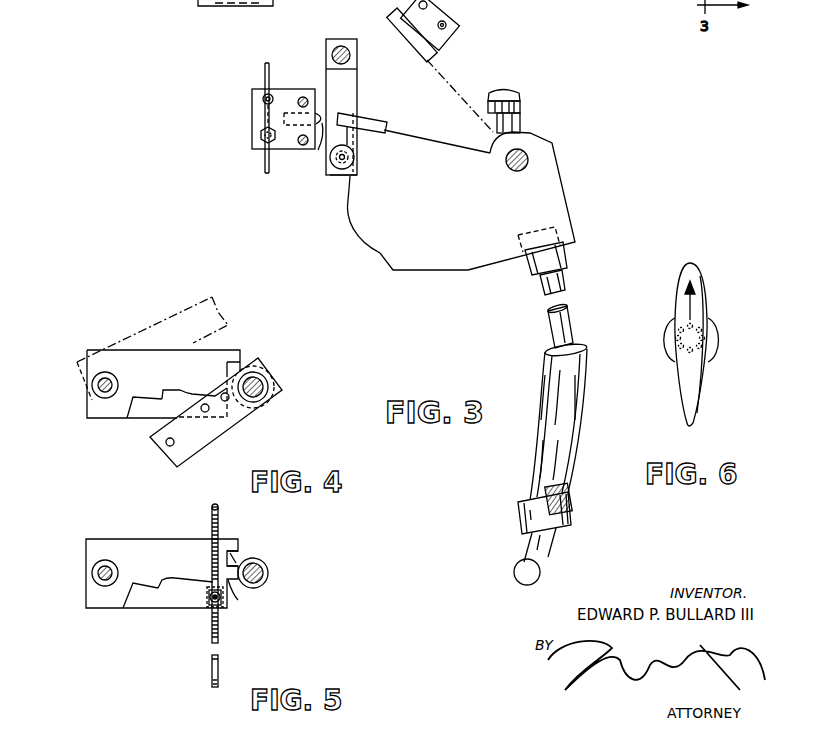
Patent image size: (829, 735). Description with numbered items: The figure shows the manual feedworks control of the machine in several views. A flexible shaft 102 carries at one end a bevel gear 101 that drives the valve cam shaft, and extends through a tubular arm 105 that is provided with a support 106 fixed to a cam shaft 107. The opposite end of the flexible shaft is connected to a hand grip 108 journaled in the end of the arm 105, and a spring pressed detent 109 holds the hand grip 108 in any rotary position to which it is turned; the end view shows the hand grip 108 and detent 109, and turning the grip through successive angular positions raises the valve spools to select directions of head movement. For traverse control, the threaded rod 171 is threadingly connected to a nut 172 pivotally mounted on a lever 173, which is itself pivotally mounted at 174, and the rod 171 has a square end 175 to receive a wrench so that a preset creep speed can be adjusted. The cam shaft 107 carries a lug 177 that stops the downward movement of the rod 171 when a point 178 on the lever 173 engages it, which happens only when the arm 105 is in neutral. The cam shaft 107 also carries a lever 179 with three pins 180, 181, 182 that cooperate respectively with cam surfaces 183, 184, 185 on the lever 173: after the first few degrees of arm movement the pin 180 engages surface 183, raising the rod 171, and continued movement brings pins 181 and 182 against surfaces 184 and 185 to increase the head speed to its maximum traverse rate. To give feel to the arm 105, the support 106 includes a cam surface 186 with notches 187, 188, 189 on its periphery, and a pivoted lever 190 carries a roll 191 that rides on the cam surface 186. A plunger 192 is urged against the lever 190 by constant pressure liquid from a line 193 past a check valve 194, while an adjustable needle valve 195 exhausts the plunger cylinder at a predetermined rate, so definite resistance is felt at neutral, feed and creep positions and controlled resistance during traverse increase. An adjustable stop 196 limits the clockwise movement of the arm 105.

In FIG. 3, the bevel gear 101 is at (509, 90).
In FIG. 3, the flexible shaft 102 is at (572, 316).
In FIG. 3, the tubular arm 105 is at (586, 352).
In FIG. 3, the support 106 is at (550, 200).
In FIG. 3, the cam shaft 107 is at (515, 172).
In FIG. 4, the cam shaft 107 is at (258, 377).
In FIG. 5, the cam shaft 107 is at (259, 584).
In FIG. 3, the hand grip 108 is at (538, 575).
In FIG. 6, the hand grip 108 is at (695, 270).
In FIG. 3, the spring pressed detent 109 is at (571, 503).
In FIG. 6, the spring pressed detent 109 is at (702, 320).
In FIG. 5, the threaded rod 171 is at (219, 509).
In FIG. 5, the nut 172 is at (223, 612).
In FIG. 4, the lever 173 is at (103, 412).
In FIG. 5, the lever 173 is at (112, 540).
In FIG. 4, the pivot 174 is at (97, 385).
In FIG. 5, the pivot 174 is at (97, 573).
In FIG. 5, the square end 175 is at (211, 686).
In FIG. 5, the lug 177 is at (242, 561).
In FIG. 5, the point 178 is at (236, 547).
In FIG. 4, the lever 179 is at (200, 442).
In FIG. 4, the pin 180 is at (229, 399).
In FIG. 4, the pin 181 is at (208, 411).
In FIG. 4, the pin 182 is at (172, 446).
In FIG. 4, the cam surface 183 is at (228, 378).
In FIG. 5, the cam surface 183 is at (230, 583).
In FIG. 4, the cam surface 184 is at (180, 398).
In FIG. 5, the cam surface 184 is at (195, 580).
In FIG. 4, the cam surface 185 is at (145, 393).
In FIG. 5, the cam surface 185 is at (152, 582).
In FIG. 3, the cam surface 186 is at (380, 248).
In FIG. 3, the notch 187 is at (355, 140).
In FIG. 3, the notch 188 is at (355, 162).
In FIG. 3, the notch 189 is at (356, 178).
In FIG. 3, the pivoted lever 190 is at (328, 86).
In FIG. 3, the roll 191 is at (338, 175).
In FIG. 3, the plunger 192 is at (322, 142).
In FIG. 3, the line 193 is at (263, 70).
In FIG. 3, the check valve 194 is at (262, 98).
In FIG. 3, the adjustable needle valve 195 is at (262, 135).
In FIG. 3, the adjustable stop 196 is at (466, 19).